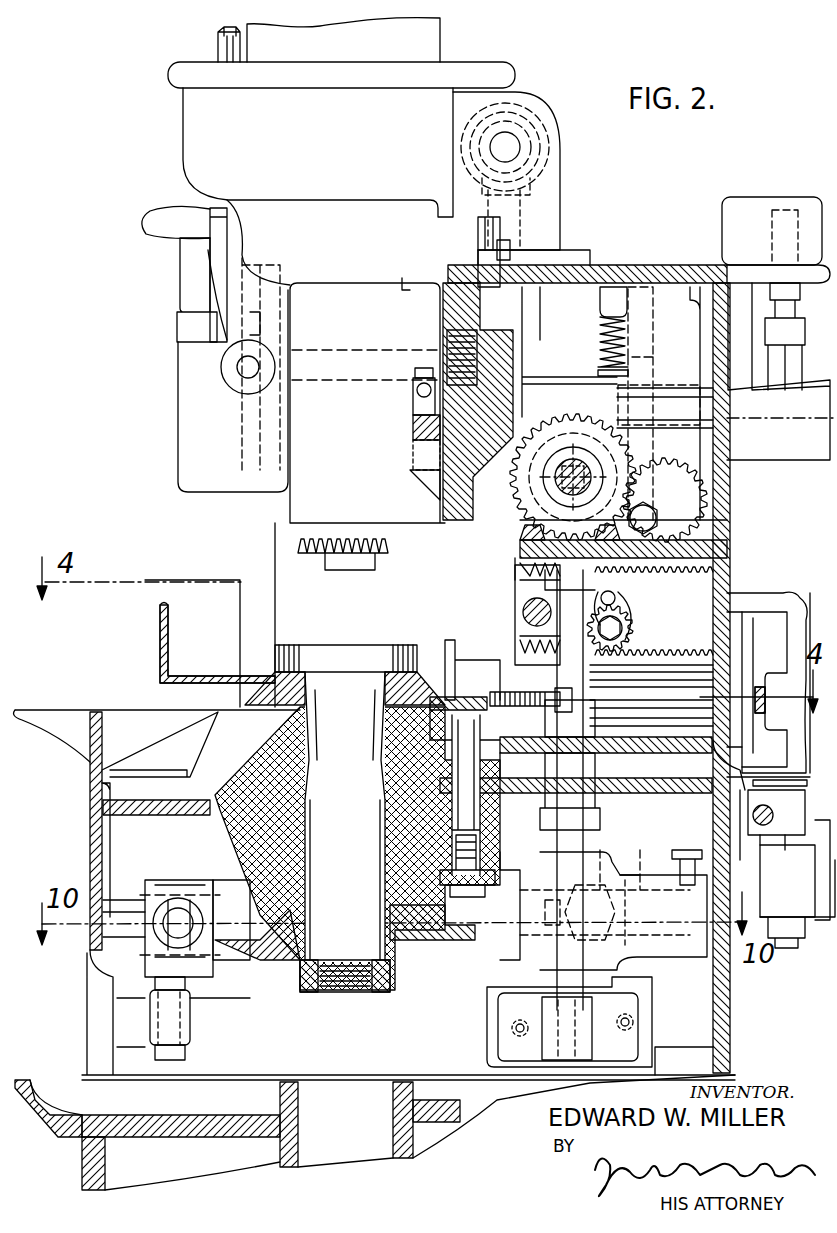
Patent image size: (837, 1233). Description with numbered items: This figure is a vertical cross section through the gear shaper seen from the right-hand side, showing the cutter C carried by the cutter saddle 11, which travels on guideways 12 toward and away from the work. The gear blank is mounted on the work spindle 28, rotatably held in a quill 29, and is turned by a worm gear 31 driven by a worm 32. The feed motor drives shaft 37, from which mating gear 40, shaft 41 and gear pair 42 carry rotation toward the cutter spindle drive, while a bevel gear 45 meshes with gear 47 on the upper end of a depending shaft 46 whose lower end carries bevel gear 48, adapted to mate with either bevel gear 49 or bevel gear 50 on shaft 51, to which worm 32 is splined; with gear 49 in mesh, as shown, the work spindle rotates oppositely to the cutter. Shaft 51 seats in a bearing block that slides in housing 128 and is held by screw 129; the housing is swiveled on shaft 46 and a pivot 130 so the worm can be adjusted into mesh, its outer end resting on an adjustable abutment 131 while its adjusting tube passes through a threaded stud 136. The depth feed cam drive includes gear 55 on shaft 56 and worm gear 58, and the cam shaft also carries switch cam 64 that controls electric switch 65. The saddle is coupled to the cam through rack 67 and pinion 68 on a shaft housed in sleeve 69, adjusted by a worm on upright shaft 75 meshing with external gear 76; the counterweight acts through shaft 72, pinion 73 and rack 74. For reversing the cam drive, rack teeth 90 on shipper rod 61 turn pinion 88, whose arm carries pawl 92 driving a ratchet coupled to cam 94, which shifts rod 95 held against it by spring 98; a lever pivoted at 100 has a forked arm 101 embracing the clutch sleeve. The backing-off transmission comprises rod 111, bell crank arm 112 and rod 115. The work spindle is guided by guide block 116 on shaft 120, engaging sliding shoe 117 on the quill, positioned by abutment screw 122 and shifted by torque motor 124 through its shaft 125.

The upright shaft 75 is at (218, 40).
The gear pair 42 is at (545, 160).
The electric switch 65 is at (745, 205).
The switch cam 64 is at (790, 362).
The worm gear 58 is at (655, 308).
The shaft 41 is at (538, 322).
The spring 98 is at (600, 330).
The rod 95 is at (598, 346).
The pivot 100 is at (665, 428).
The shaft 72 is at (672, 402).
The pinion 68 is at (445, 340).
The sleeve 69 is at (310, 352).
The rack 67 is at (415, 392).
The rack 74 is at (415, 418).
The pinion 73 is at (415, 448).
The guideways 12 is at (432, 290).
The cutter saddle 11 is at (290, 508).
The external gear 76 is at (228, 448).
The forked arm 101 is at (518, 478).
The shaft 56 is at (660, 520).
The bevel gear 45 is at (500, 525).
The gear 47 is at (505, 543).
The mating gear 40 is at (488, 578).
The shaft 37 is at (522, 612).
The gear 55 is at (676, 570).
The cam 94 is at (632, 598).
The pawl 92 is at (633, 615).
The pinion 88 is at (625, 630).
The rack teeth 90 is at (632, 656).
The operating rod 61 is at (678, 670).
The abutment screw 122 is at (575, 695).
The guide block 116 is at (480, 662).
The sliding shoe 117 is at (475, 690).
The electric torque motor 124 is at (768, 674).
The shaft 125 is at (708, 680).
The work spindle 28 is at (338, 660).
The quill 29 is at (296, 668).
The cutter C is at (310, 567).
The shaft 120 is at (478, 815).
The depending shaft 46 is at (588, 828).
The bevel gear 48 is at (598, 855).
The screw 129 is at (686, 850).
The bevel gear 50 is at (620, 880).
The bevel gear 49 is at (515, 950).
The rod 115 is at (775, 812).
The rod 111 is at (776, 862).
The bell crank arm 112 is at (810, 928).
The stud 136 is at (175, 890).
The shaft 51 is at (138, 915).
The housing 128 is at (240, 960).
The adjustable abutment 131 is at (190, 1028).
The worm 32 is at (330, 975).
The worm gear 31 is at (440, 948).
The pivot 130 is at (556, 1040).